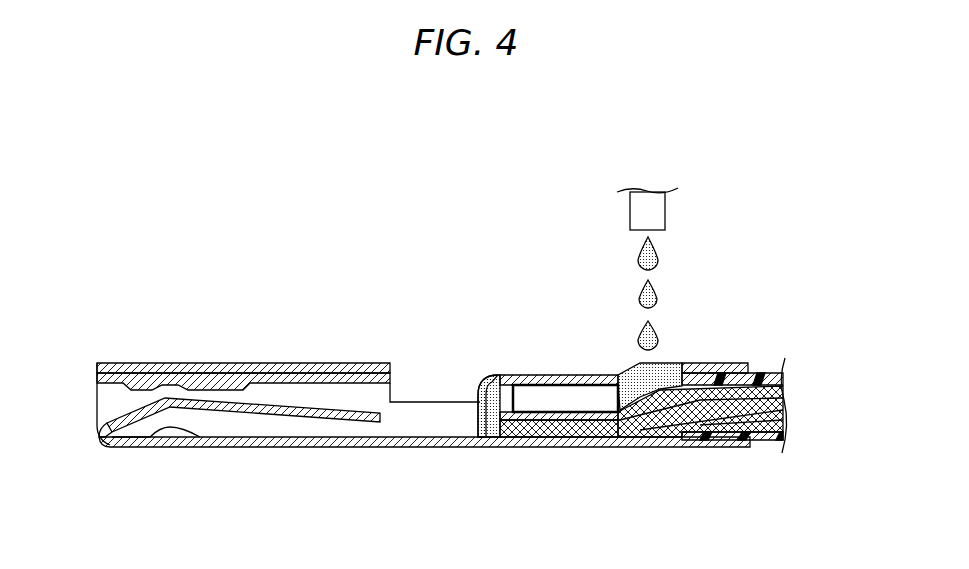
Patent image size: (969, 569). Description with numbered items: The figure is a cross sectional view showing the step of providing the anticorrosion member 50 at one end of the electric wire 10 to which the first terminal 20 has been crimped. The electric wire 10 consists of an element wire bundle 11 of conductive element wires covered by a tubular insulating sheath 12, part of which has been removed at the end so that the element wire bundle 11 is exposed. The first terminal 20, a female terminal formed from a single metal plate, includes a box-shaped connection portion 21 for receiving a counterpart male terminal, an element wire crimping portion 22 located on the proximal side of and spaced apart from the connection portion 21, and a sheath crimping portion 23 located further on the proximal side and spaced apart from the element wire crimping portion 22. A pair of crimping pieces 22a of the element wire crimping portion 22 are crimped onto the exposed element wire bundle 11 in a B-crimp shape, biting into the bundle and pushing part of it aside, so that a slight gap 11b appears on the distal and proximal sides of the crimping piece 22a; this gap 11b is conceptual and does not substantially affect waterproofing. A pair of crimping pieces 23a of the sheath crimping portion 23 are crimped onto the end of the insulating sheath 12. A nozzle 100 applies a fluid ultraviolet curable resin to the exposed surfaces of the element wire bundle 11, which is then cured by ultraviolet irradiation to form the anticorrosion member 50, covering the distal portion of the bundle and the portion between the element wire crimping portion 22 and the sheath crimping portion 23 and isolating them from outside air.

The first terminal 20 is at (237, 364).
The connection portion 21 is at (245, 448).
The element wire crimping portion 22 is at (562, 440).
The crimping pieces 22a is at (548, 395).
The sheath crimping portion 23 is at (707, 441).
The crimping pieces 23a is at (727, 374).
The element wire bundle 11 is at (605, 427).
The gap 11b is at (490, 388).
The anticorrosion member 50 is at (499, 376).
The electric wire 10 is at (797, 364).
The insulating sheath 12 is at (763, 376).
The nozzle 100 is at (667, 213).